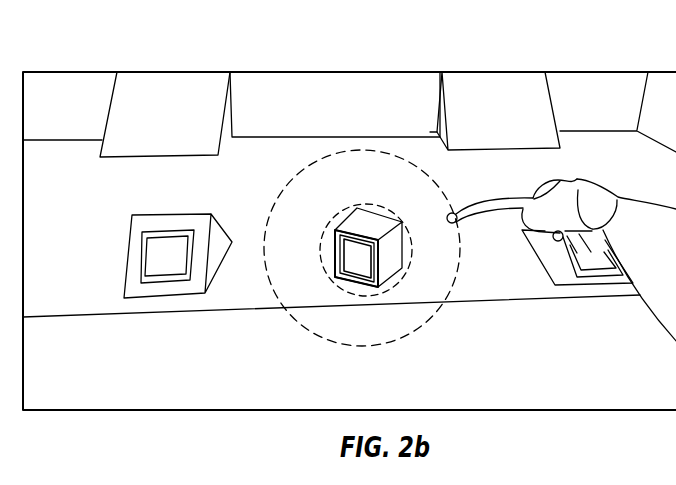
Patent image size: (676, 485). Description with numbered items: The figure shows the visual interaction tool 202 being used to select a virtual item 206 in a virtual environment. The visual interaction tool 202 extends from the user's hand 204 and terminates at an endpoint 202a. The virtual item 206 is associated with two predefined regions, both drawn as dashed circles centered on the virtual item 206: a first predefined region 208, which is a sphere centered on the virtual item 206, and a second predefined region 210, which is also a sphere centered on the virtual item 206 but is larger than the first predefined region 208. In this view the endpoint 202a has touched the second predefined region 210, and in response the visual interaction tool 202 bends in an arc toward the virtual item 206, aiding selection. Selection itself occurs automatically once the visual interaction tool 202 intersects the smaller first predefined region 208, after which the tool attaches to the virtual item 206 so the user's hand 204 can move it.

The visual interaction tool 202 is at (500, 208).
The endpoint 202a is at (446, 223).
The user's hand 204 is at (573, 182).
The virtual item 206 is at (368, 223).
The first predefined region 208 is at (337, 229).
The second predefined region 210 is at (293, 173).